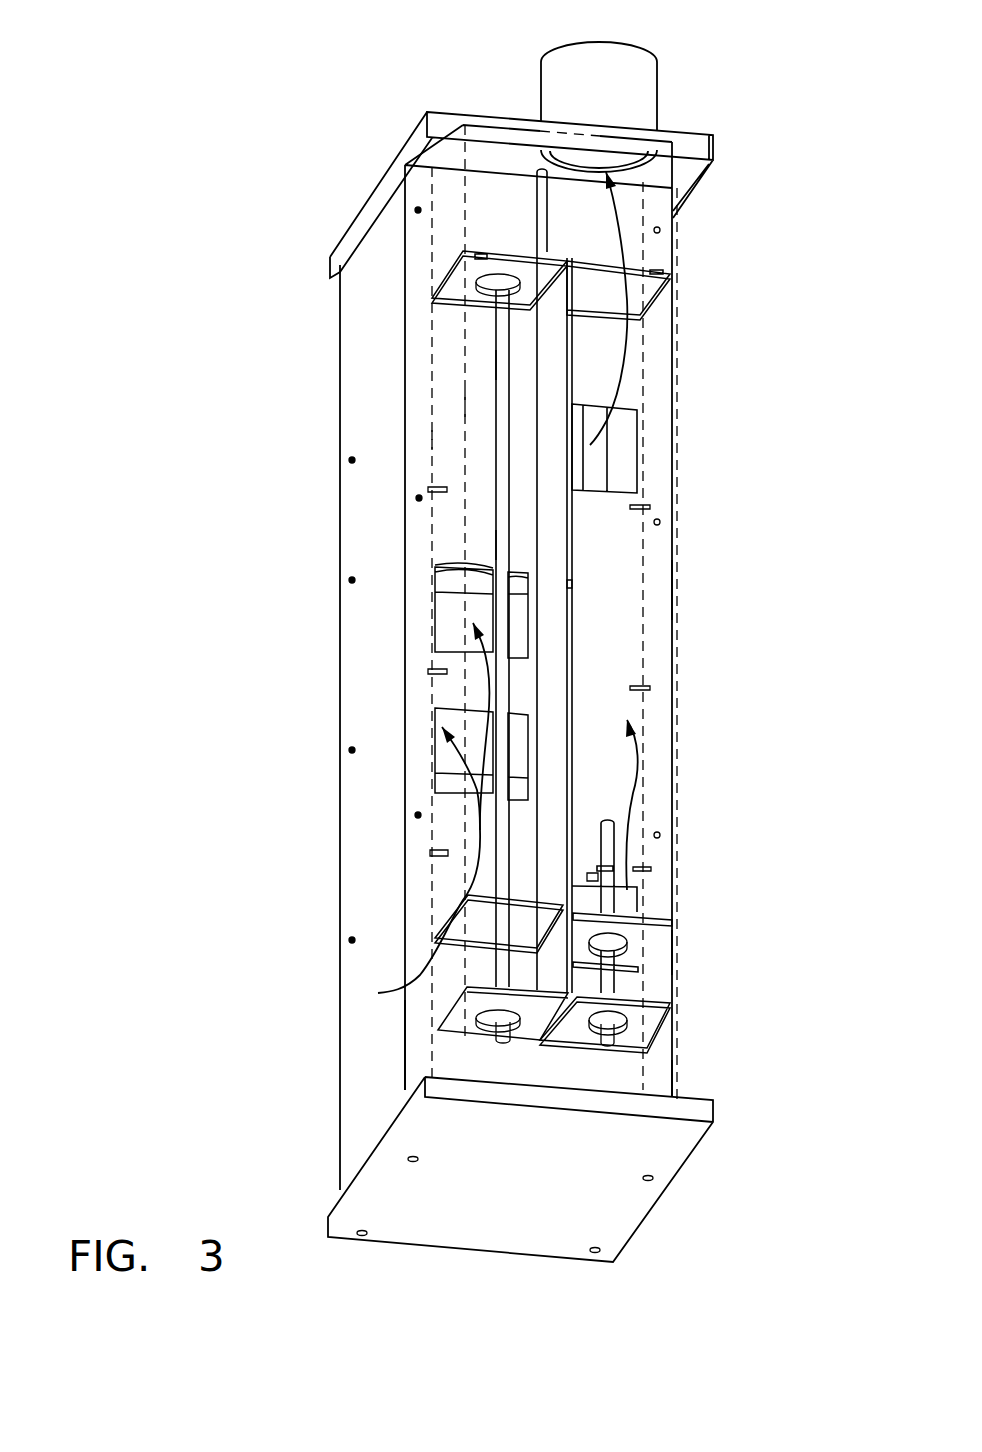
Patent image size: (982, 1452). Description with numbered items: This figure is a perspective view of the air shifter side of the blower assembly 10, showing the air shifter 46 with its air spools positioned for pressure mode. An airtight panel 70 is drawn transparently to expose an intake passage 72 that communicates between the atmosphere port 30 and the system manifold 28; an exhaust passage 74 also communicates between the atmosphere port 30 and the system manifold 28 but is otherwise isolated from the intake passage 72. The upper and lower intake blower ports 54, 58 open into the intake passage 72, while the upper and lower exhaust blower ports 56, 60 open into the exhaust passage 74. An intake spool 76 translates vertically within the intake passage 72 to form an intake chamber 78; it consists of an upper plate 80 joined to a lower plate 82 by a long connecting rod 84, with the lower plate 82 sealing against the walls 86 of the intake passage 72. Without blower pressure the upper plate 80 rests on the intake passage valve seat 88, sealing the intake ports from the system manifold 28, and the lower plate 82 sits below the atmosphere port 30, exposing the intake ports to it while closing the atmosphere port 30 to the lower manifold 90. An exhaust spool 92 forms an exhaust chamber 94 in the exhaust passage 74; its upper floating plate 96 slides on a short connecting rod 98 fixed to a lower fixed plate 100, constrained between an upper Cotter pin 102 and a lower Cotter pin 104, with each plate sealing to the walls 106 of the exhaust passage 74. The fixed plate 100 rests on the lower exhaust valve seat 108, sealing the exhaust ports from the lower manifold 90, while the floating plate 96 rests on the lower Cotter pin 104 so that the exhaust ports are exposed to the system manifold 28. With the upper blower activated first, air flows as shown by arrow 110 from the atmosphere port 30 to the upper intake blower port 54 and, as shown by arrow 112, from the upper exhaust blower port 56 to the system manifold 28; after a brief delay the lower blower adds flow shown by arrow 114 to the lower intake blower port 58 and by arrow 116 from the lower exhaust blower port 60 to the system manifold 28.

The blower assembly 10 is at (200, 563).
The system manifold 28 is at (545, 186).
The atmosphere port 30 is at (450, 983).
The air shifter 46 is at (698, 245).
The upper intake blower port 54 is at (453, 617).
The upper exhaust blower port 56 is at (622, 470).
The lower intake blower port 58 is at (452, 720).
The lower exhaust blower port 60 is at (630, 902).
The airtight panel 70 is at (452, 445).
The intake passage 72 is at (465, 401).
The exhaust passage 74 is at (642, 592).
The intake spool 76 is at (470, 366).
The intake chamber 78 is at (465, 547).
The upper plate 80 is at (477, 293).
The lower plate 82 is at (530, 1015).
The long connecting rod 84 is at (498, 488).
The walls 86 is at (450, 878).
The intake passage valve seat 88 is at (535, 278).
The lower manifold 90 is at (645, 1078).
The exhaust spool 92 is at (676, 953).
The exhaust chamber 94 is at (650, 556).
The upper floating plate 96 is at (672, 910).
The short connecting rod 98 is at (610, 982).
The lower fixed plate 100 is at (578, 1023).
The upper Cotter pin 102 is at (592, 873).
The lower Cotter pin 104 is at (603, 947).
The walls 106 is at (658, 323).
The lower exhaust valve seat 108 is at (672, 1003).
The arrow 110 is at (490, 702).
The arrow 112 is at (625, 360).
The arrow 114 is at (458, 752).
The arrow 116 is at (637, 765).